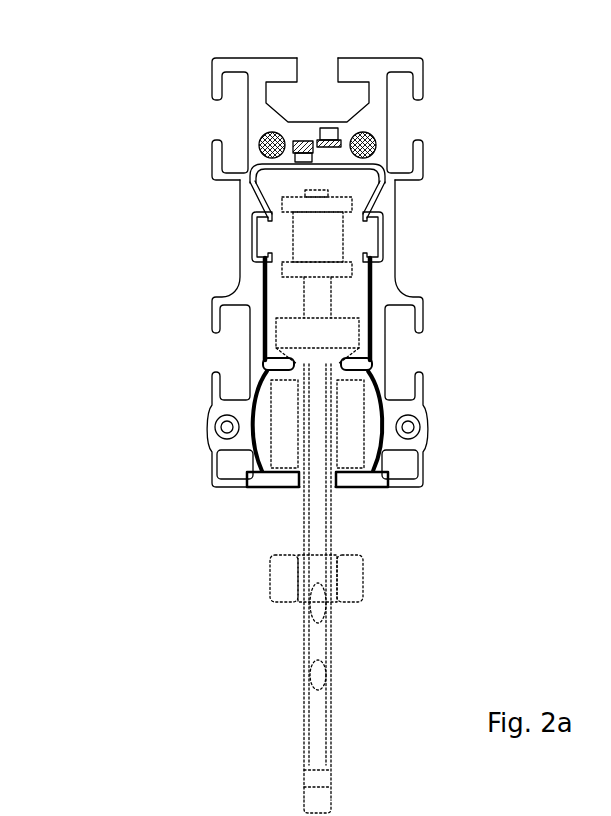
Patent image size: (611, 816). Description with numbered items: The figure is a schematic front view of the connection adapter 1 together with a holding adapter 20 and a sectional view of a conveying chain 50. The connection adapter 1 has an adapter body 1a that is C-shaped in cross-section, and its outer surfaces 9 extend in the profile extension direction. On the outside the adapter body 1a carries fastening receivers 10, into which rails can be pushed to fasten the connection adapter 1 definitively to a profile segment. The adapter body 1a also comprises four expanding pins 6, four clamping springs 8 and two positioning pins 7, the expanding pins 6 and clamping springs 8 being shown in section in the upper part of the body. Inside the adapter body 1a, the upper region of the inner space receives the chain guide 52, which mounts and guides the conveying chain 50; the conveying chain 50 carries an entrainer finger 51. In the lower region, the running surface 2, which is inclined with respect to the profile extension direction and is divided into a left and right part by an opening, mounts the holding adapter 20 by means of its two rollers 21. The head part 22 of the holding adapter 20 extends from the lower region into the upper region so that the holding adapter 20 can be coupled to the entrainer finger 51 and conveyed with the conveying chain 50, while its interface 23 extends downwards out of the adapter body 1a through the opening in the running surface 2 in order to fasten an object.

The connection adapter 1 is at (260, 284).
The adapter body 1a is at (213, 63).
The running surface 2 is at (292, 365).
The expanding pin 6 is at (262, 147).
The positioning pin 7 is at (225, 429).
The clamping spring 8 is at (328, 128).
The outer surface 9 is at (388, 57).
The fastening receiver 10 is at (290, 103).
The holding adapter 20 is at (283, 637).
The roller 21 is at (287, 443).
The head part 22 is at (293, 340).
The interface 23 is at (300, 748).
The conveying chain 50 is at (330, 235).
The entrainer finger 51 is at (318, 306).
The chain guide 52 is at (277, 235).